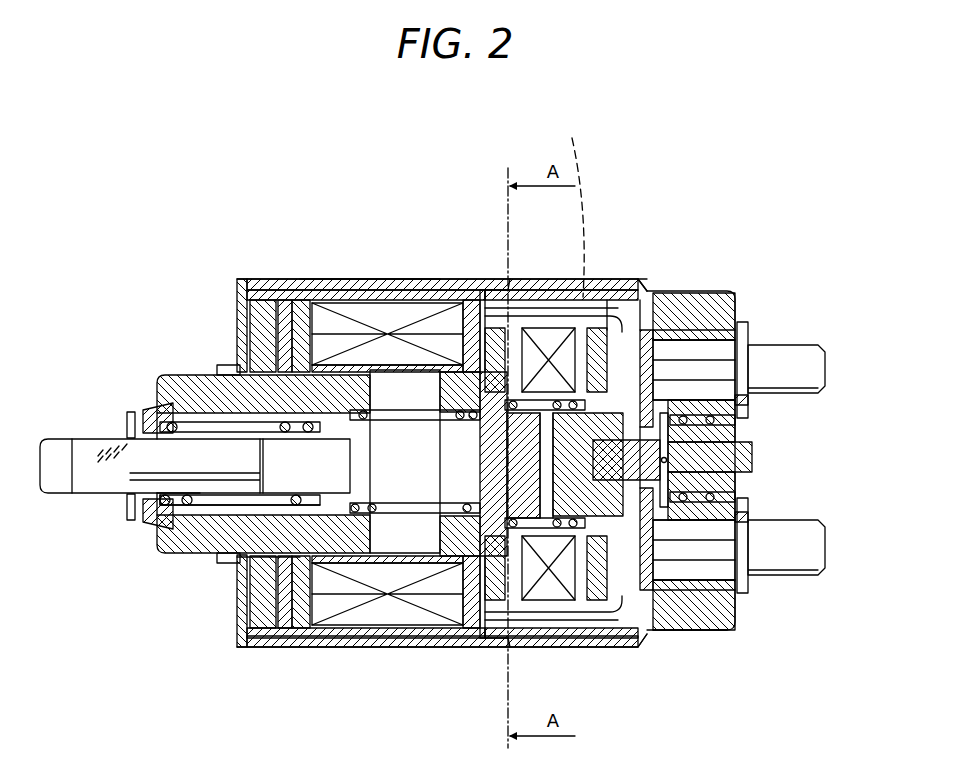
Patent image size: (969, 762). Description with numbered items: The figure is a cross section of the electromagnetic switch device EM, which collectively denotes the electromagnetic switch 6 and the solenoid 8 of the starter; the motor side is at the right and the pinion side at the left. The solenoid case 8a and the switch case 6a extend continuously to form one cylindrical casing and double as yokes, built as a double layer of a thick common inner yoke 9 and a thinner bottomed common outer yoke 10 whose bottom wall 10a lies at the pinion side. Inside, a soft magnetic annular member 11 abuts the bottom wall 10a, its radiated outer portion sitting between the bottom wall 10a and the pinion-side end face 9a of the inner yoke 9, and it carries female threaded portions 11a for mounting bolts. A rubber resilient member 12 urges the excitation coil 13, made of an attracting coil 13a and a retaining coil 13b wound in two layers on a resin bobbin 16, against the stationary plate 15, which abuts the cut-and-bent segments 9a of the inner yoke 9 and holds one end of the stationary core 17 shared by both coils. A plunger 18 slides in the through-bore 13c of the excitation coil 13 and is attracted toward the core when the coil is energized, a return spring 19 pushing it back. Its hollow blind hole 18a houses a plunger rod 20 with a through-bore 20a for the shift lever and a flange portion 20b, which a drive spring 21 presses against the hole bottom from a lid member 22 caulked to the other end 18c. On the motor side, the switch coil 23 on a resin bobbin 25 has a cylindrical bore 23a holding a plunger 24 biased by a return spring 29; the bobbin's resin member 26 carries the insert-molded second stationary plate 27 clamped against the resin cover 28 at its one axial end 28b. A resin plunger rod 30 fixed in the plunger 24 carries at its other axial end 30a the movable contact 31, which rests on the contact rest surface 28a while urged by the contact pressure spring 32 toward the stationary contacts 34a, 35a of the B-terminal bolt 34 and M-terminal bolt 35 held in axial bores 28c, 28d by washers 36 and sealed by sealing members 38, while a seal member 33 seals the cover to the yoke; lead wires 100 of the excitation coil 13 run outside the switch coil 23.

The lead wires 100 is at (570, 205).
The electromagnetic switch device EM is at (598, 194).
The electromagnetic switch 6 is at (660, 275).
The switch case 6a is at (644, 270).
The solenoid 8 is at (265, 290).
The solenoid case 8a is at (449, 278).
The inner yoke 9 is at (285, 300).
The cut-and-bent segments 9a is at (517, 288).
The outer yoke 10 is at (300, 300).
The bottom wall 10a is at (508, 282).
The annular member 11 is at (244, 290).
The female threaded portions 11a is at (235, 366).
The resilient member 12 is at (252, 320).
The excitation coil 13 is at (440, 209).
The attracting coil 13a is at (378, 335).
The retaining coil 13b is at (410, 335).
The through-bore 13c is at (360, 634).
The stationary plate 15 is at (500, 522).
The bobbin 16 is at (471, 600).
The stationary core 17 is at (440, 500).
The plunger 18 is at (170, 392).
The hollow blind hole 18a is at (205, 426).
The other end 18c is at (160, 546).
The return spring 19 is at (365, 520).
The plunger rod 20 is at (52, 493).
The through-bore 20a is at (78, 455).
The flange portion 20b is at (290, 514).
The drive spring 21 is at (185, 524).
The lid member 22 is at (170, 505).
The switch coil 23 is at (550, 328).
The cylindrical bore 23a is at (692, 326).
The plunger 24 is at (550, 602).
The bobbin 25 is at (578, 300).
The resin member 26 is at (650, 600).
The second stationary plate 27 is at (590, 300).
The resin cover 28 is at (656, 340).
The contact rest surface 28a is at (737, 470).
The one axial end 28b is at (622, 297).
The axial bore 28c is at (740, 338).
The axial bore 28d is at (656, 592).
The return spring 29 is at (565, 520).
The plunger rod 30 is at (700, 480).
The other axial end 30a is at (670, 498).
The movable contact 31 is at (752, 446).
The contact pressure spring 32 is at (692, 412).
The seal member 33 is at (664, 510).
The B-terminal bolt 34 is at (810, 367).
The stationary contact 34a is at (672, 332).
The M-terminal bolt 35 is at (824, 556).
The stationary contact 35a is at (690, 582).
The washers 36 is at (750, 336).
The sealing member 38 is at (750, 408).